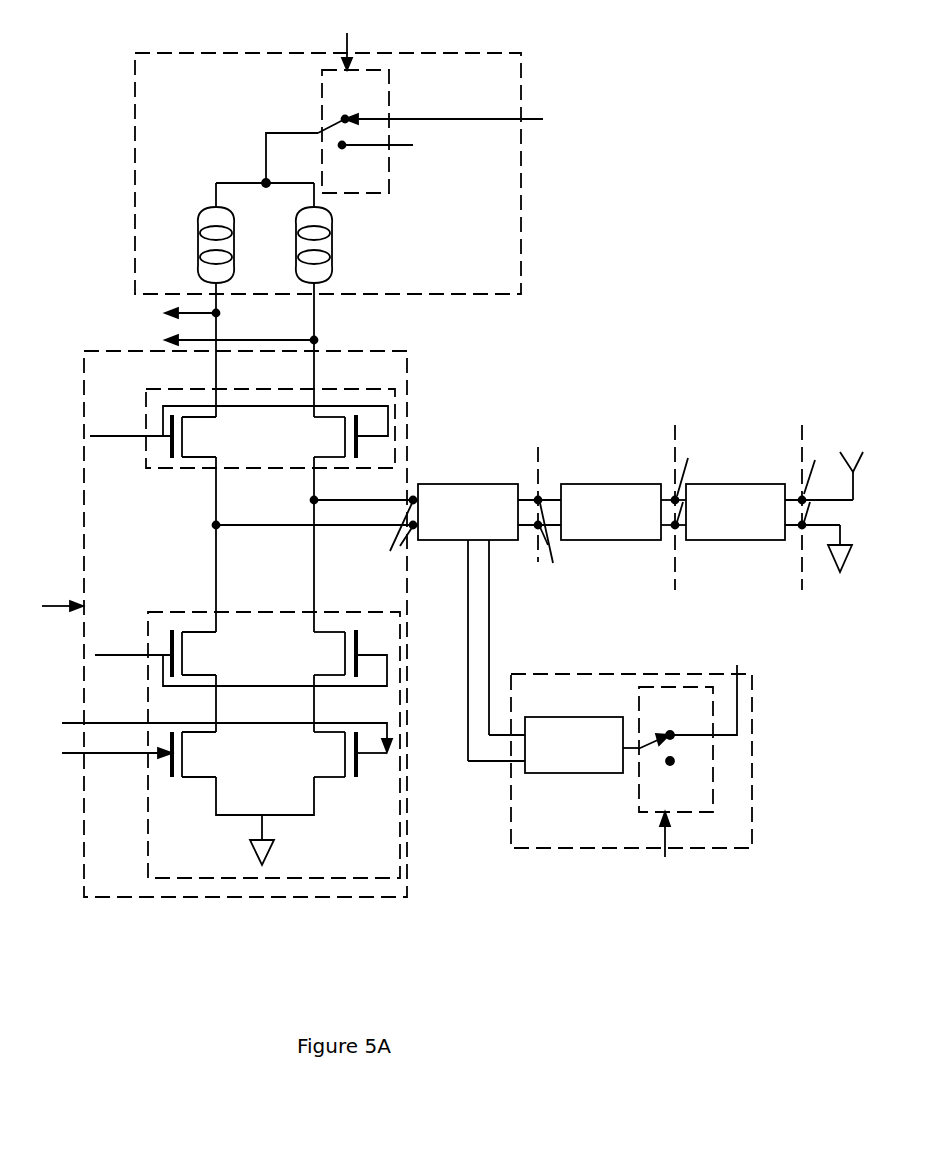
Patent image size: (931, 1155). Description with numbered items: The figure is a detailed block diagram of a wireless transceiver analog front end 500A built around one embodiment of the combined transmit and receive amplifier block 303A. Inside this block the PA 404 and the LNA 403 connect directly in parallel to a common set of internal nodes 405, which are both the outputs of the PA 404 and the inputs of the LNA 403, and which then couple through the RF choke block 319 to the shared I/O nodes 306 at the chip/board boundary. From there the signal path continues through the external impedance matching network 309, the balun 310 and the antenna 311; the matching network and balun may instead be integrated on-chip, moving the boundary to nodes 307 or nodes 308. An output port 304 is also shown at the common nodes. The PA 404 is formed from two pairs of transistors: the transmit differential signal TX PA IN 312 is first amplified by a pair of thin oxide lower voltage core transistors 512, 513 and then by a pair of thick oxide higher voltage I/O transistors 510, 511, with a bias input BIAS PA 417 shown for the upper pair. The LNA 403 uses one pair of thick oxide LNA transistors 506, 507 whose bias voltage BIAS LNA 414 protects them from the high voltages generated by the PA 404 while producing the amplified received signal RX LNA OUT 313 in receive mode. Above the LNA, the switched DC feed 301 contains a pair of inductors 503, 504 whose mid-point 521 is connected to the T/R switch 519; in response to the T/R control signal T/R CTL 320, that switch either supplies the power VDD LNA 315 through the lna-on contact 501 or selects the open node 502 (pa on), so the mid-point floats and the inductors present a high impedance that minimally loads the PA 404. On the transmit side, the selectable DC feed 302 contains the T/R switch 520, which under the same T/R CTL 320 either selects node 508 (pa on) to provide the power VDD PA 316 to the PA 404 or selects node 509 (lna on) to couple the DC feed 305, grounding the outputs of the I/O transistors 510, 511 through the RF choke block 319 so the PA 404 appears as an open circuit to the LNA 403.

The wireless transceiver analog front end 500A is at (92, 26).
The switched DC feed 301 is at (522, 78).
The selectable DC feed 302 is at (753, 814).
The combined transmit and receive amplifier block 303A is at (83, 388).
The amplifier output port 304 is at (381, 532).
The DC feed 305 is at (545, 732).
The shared I/O nodes 306 is at (558, 512).
The nodes 307 is at (691, 507).
The nodes 308 is at (819, 507).
The external impedance matching network 309 is at (611, 498).
The balun 310 is at (735, 498).
The antenna 311 is at (855, 494).
The transmit differential signal TX PA IN 312 is at (208, 757).
The amplified received signal RX LNA OUT 313 is at (173, 319).
The power VDD LNA 315 is at (490, 109).
The power VDD PA 316 is at (713, 674).
The RF choke block 319 is at (468, 609).
The T/R control signal T/R CTL 320 is at (388, 458).
The LNA 403 is at (345, 389).
The PA 404 is at (367, 612).
The common set of internal nodes 405 is at (308, 494).
The bias voltage BIAS LNA 414 is at (131, 401).
The PA bias input 417 is at (133, 620).
The LNA-on switch contact 501 is at (347, 114).
The node (pa on) 502 is at (344, 154).
The inductor 503 is at (192, 245).
The inductor 504 is at (342, 245).
The LNA transistor 506 is at (275, 432).
The LNA transistor 507 is at (329, 436).
The node (pa on) 508 is at (672, 731).
The node (lna on) 509 is at (677, 768).
The higher voltage I/O transistor 510 is at (275, 658).
The higher voltage I/O transistor 511 is at (329, 653).
The lower voltage core transistor 512 is at (200, 754).
The lower voltage core transistor 513 is at (345, 754).
The T/R switch 519 is at (392, 87).
The T/R switch 520 is at (638, 806).
The mid-point 521 is at (260, 179).